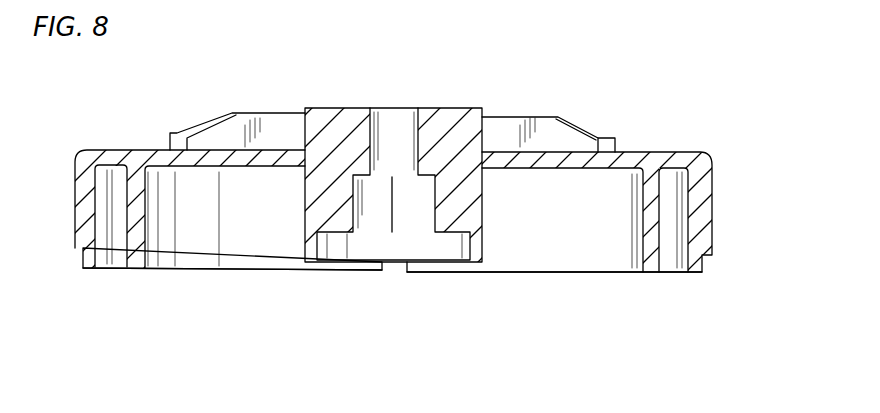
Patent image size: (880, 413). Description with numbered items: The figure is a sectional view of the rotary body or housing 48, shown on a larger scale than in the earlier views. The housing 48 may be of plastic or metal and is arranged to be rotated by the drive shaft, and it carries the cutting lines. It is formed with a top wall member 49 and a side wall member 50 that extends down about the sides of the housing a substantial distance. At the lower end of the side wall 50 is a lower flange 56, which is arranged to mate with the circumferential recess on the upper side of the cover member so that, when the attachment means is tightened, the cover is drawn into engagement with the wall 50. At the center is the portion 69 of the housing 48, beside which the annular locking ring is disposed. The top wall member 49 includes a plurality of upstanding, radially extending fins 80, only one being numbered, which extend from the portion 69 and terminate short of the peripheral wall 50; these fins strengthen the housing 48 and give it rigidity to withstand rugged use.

The rotary body 48 is at (544, 278).
The top wall member 49 is at (663, 152).
The side wall member 50 is at (712, 205).
The lower flange 56 is at (88, 268).
The portion of housing 69 is at (461, 118).
The fins 80 is at (235, 113).